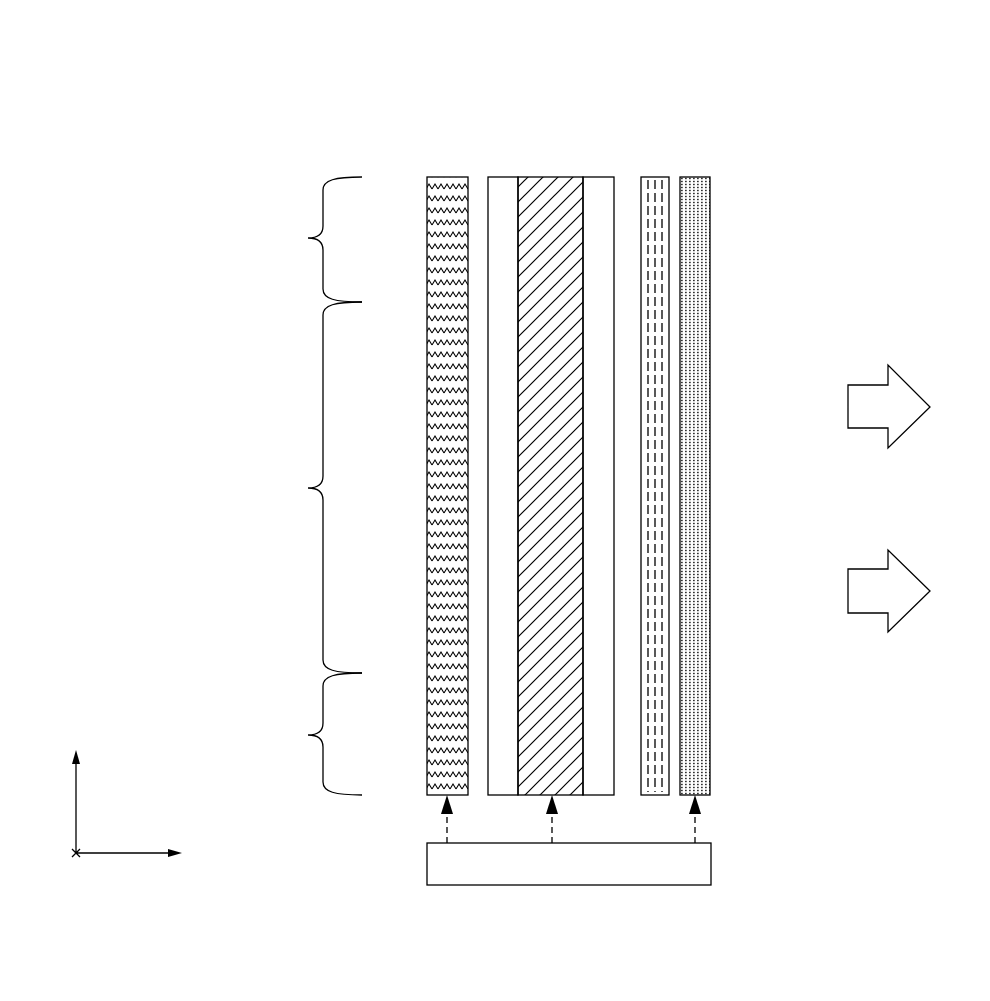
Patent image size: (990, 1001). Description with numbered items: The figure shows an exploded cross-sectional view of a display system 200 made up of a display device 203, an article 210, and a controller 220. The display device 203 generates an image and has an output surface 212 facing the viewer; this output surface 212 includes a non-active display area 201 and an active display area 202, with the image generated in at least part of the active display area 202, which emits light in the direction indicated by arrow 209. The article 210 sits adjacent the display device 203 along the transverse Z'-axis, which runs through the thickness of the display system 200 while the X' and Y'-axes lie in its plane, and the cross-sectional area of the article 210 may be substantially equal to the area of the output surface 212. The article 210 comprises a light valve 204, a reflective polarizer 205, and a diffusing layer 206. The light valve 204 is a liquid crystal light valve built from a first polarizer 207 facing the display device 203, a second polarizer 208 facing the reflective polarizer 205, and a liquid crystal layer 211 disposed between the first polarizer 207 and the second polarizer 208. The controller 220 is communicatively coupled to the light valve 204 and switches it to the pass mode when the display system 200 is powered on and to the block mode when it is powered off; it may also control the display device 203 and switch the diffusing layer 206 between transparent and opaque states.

The display system 200 is at (836, 122).
The non-active display area 201 is at (308, 238).
The active display area 202 is at (308, 488).
The display device 203 is at (407, 138).
The light valve 204 is at (614, 130).
The reflective polarizer 205 is at (650, 184).
The diffusing layer 206 is at (702, 184).
The first polarizer 207 is at (496, 184).
The second polarizer 208 is at (587, 184).
The arrow 209 is at (872, 385).
The article 210 is at (708, 83).
The liquid crystal layer 211 is at (544, 184).
The output surface 212 is at (468, 188).
The controller 220 is at (591, 878).